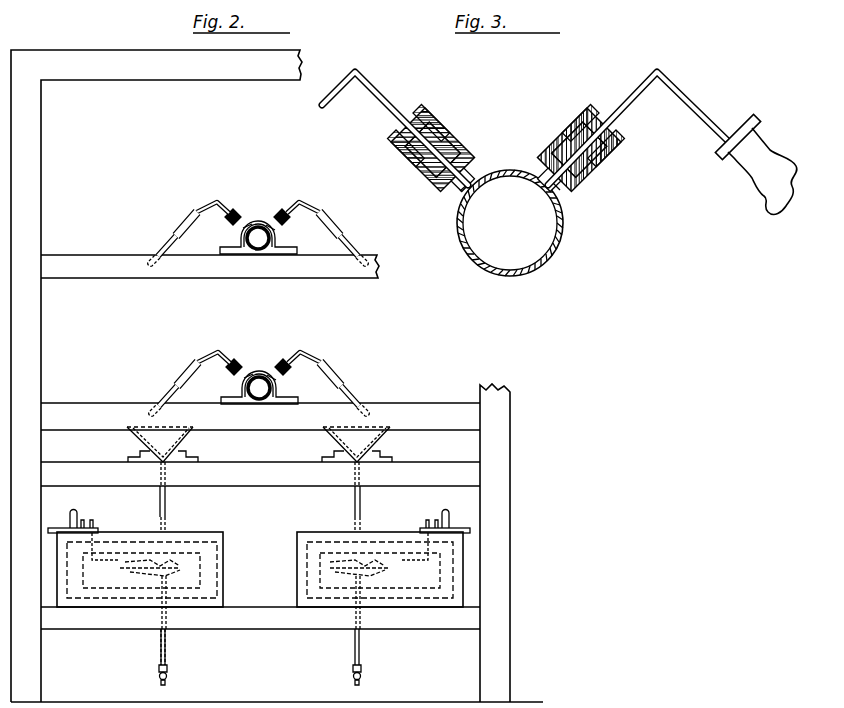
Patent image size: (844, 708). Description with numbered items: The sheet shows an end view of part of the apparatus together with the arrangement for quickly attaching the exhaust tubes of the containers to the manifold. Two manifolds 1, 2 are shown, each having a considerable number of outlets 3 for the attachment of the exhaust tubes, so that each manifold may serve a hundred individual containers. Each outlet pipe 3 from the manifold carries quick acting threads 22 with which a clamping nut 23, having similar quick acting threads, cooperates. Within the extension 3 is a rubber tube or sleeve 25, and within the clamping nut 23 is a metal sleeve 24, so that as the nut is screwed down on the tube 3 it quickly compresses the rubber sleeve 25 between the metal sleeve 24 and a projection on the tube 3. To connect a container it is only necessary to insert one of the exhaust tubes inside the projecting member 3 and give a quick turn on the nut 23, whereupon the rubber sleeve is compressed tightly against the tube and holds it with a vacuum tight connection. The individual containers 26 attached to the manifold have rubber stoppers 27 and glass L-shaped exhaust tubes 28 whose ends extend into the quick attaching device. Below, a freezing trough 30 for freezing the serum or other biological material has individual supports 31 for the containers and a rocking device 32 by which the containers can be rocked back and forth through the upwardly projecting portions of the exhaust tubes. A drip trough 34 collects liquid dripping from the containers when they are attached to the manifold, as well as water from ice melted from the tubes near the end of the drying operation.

In FIG. 3, the manifold 1 is at (560, 243).
In FIG. 2, the manifold 2 is at (263, 192).
In FIG. 2, the outlet pipe 3 is at (243, 228).
In FIG. 3, the outlet pipe 3 is at (458, 192).
In FIG. 3, the quick acting threads 22 is at (446, 130).
In FIG. 2, the clamping nut 23 is at (234, 210).
In FIG. 3, the clamping nut 23 is at (420, 100).
In FIG. 3, the metal sleeve 24 is at (432, 116).
In FIG. 3, the rubber tube or sleeve 25 is at (424, 172).
In FIG. 2, the container 26 is at (170, 237).
In FIG. 3, the container 26 is at (770, 198).
In FIG. 2, the rubber stopper 27 is at (330, 222).
In FIG. 3, the rubber stopper 27 is at (750, 120).
In FIG. 2, the L-shaped exhaust tube 28 is at (308, 207).
In FIG. 3, the L-shaped exhaust tube 28 is at (364, 82).
In FIG. 2, the trough 30 is at (103, 613).
In FIG. 2, the support 31 is at (166, 546).
In FIG. 2, the rocking device 32 is at (95, 528).
In FIG. 2, the drip trough 34 is at (136, 438).